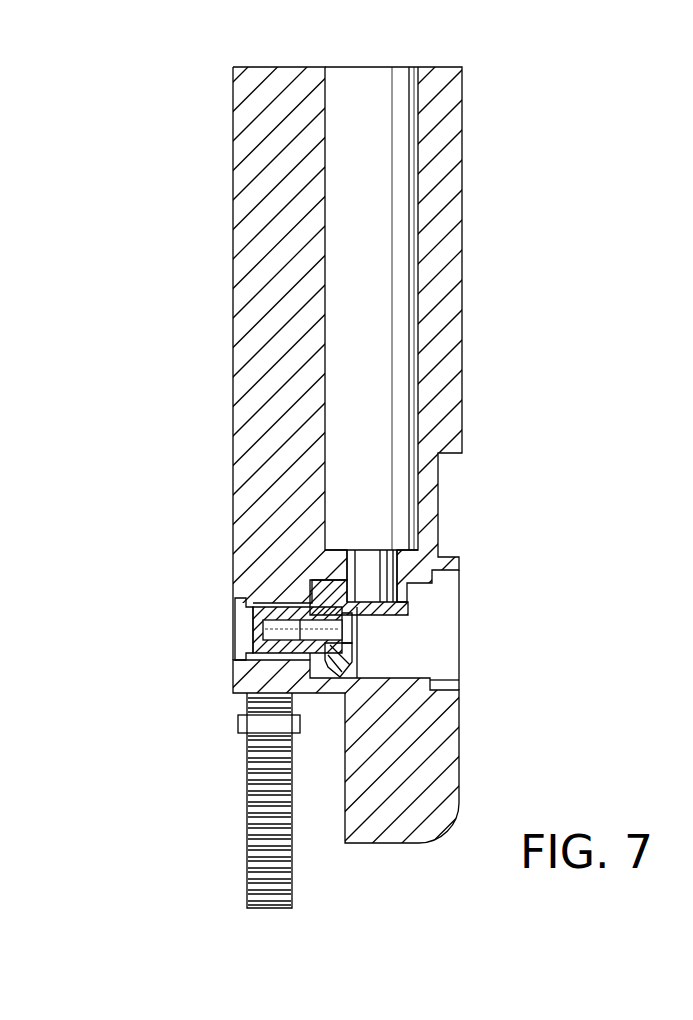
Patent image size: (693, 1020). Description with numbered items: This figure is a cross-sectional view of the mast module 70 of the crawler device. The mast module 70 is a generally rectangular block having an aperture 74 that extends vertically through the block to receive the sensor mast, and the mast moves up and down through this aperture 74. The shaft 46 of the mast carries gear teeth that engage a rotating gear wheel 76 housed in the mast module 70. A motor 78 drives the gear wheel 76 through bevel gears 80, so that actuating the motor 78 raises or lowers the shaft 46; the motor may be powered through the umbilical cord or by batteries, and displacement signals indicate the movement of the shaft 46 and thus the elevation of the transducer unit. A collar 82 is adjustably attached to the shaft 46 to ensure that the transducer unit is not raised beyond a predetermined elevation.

The mast module 70 is at (178, 167).
The aperture 74 is at (283, 67).
The motor 78 is at (362, 338).
The rotating gear wheel 76 is at (243, 633).
The bevel gears 80 is at (330, 658).
The collar 82 is at (247, 727).
The shaft 46 is at (247, 838).